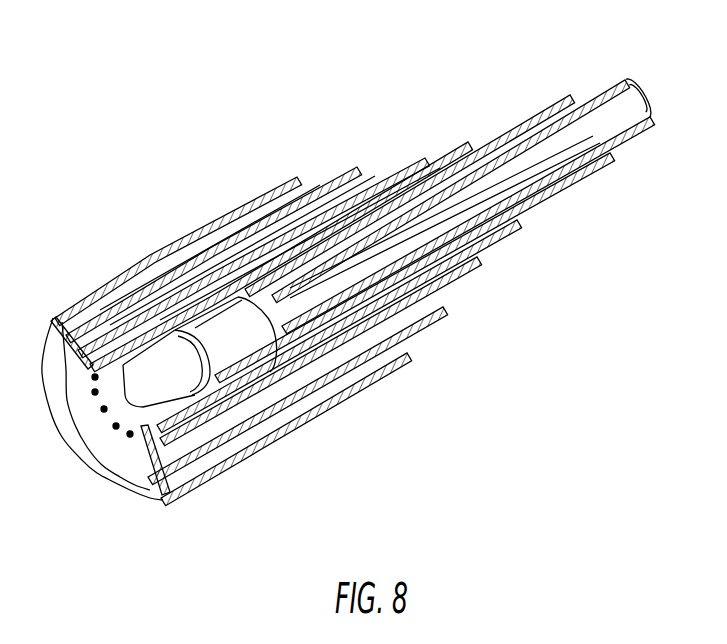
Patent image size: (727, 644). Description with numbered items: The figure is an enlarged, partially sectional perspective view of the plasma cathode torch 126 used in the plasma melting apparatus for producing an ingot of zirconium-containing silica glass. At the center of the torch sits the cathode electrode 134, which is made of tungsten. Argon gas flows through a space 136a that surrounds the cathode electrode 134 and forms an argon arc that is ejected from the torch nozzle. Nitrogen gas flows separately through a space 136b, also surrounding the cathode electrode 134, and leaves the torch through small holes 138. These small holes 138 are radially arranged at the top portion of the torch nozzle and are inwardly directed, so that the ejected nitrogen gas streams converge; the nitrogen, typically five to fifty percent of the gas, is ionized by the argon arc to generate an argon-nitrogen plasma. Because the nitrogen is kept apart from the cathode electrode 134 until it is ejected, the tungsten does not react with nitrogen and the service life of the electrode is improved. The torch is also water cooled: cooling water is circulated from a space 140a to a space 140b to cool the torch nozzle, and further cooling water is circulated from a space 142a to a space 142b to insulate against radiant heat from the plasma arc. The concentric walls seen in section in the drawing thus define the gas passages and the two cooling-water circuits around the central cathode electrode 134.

The plasma cathode torch 126 is at (470, 288).
The cathode electrode 134 is at (245, 355).
The space 136a is at (477, 143).
The space 136b is at (425, 158).
The small holes 138 is at (128, 436).
The space 140a is at (368, 177).
The space 140b is at (306, 183).
The space 142a is at (633, 105).
The space 142b is at (577, 98).